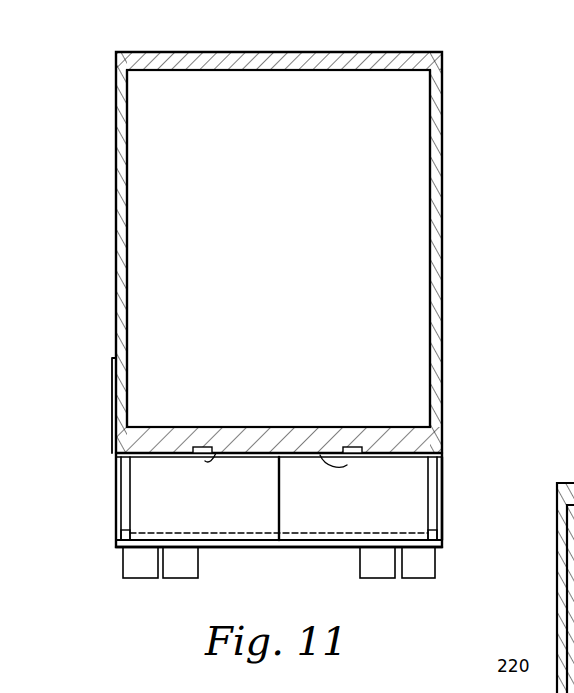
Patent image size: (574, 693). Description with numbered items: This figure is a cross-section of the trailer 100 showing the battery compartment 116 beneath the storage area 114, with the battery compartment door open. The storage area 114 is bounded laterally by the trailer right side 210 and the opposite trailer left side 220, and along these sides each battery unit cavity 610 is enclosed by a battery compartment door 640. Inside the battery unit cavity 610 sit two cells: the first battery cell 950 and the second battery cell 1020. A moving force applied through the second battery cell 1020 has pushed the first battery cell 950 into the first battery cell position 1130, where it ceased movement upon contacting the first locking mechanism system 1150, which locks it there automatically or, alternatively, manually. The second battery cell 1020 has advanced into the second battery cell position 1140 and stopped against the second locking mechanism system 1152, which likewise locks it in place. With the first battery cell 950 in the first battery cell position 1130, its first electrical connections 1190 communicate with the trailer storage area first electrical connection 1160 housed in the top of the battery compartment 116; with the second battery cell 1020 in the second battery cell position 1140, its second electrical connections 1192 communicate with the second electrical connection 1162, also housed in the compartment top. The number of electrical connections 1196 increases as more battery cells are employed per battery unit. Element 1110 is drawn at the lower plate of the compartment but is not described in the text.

The trailer 100 is at (101, 88).
The trailer left side 220 is at (112, 187).
The trailer right side 210 is at (442, 190).
The storage area 114 is at (299, 256).
The first electrical connection 1160 is at (350, 446).
The second electrical connection 1162 is at (200, 446).
The second electrical connections 1192 is at (216, 453).
The first electrical connections 1190 is at (320, 455).
The electrical connections 1196 is at (398, 427).
The second battery cell position 1140 is at (148, 483).
The second locking mechanism system 1152 is at (121, 537).
The first battery cell position 1130 is at (412, 492).
The battery unit cavity 610 is at (431, 479).
The battery compartment door 640 is at (441, 512).
The first locking mechanism system 1150 is at (438, 537).
The bottom plate 1110 is at (335, 528).
The battery compartment 116 is at (280, 558).
The second battery cell 1020 is at (231, 506).
The first battery cell 950 is at (364, 506).